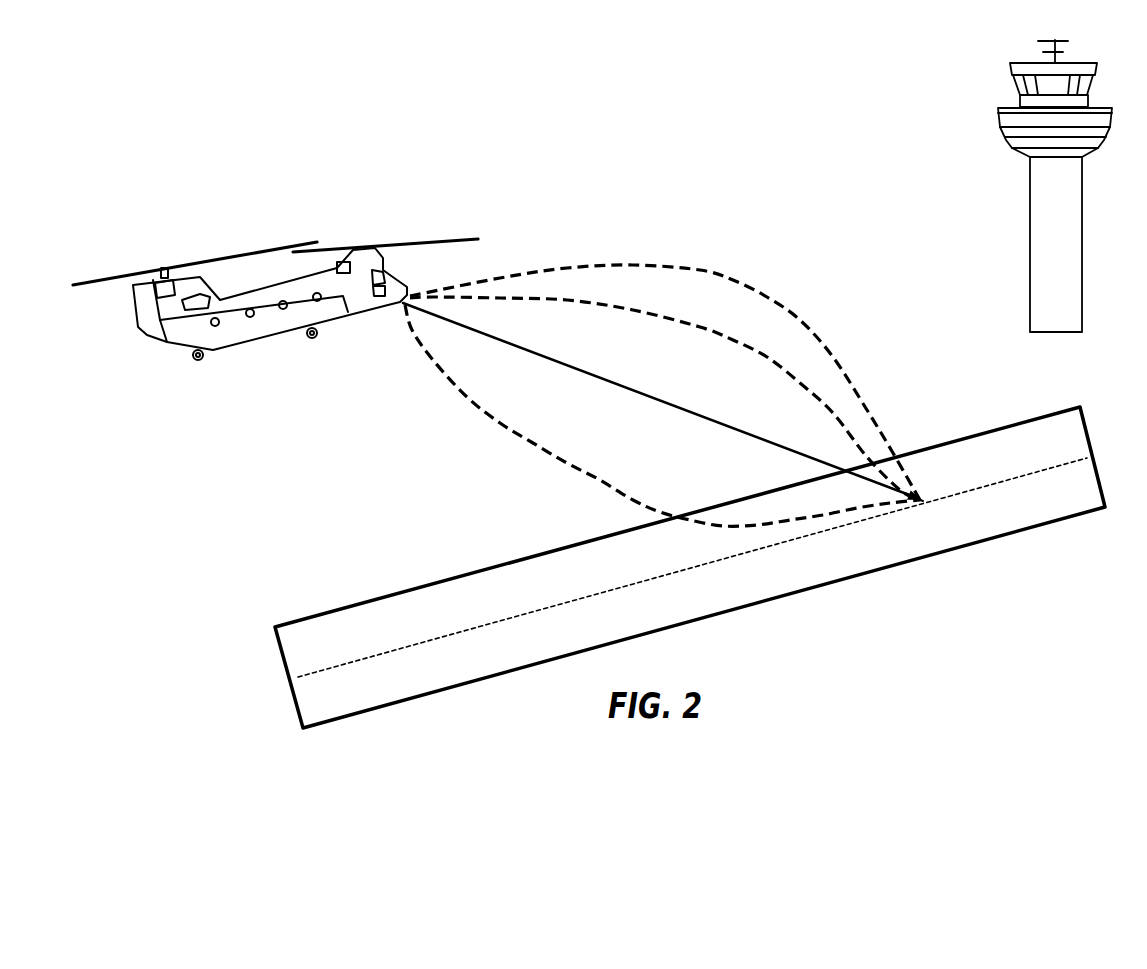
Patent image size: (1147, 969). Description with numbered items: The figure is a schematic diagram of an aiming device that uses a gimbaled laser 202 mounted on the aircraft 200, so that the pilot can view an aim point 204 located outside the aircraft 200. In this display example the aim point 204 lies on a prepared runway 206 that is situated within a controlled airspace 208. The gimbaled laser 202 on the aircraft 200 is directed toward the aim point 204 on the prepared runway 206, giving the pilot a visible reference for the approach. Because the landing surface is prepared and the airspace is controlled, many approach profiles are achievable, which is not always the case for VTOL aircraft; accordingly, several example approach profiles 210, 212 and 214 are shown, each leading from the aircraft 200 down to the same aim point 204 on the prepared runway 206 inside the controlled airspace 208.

The aircraft 200 is at (293, 290).
The gimbaled laser 202 is at (677, 398).
The aim point 204 is at (930, 490).
The prepared runway 206 is at (505, 594).
The controlled airspace 208 is at (1022, 203).
The approach profile 210 is at (736, 279).
The approach profile 212 is at (766, 345).
The approach profile 214 is at (663, 502).